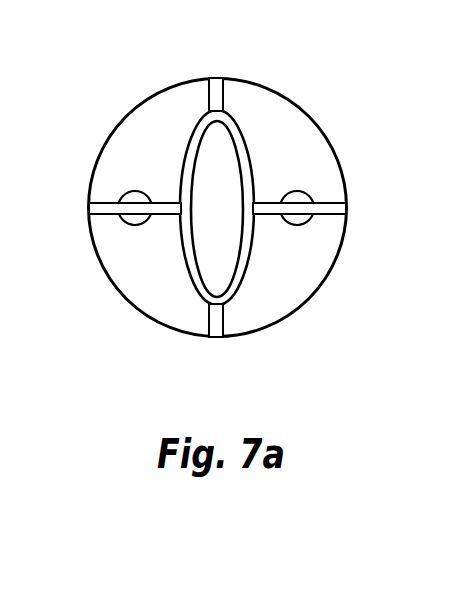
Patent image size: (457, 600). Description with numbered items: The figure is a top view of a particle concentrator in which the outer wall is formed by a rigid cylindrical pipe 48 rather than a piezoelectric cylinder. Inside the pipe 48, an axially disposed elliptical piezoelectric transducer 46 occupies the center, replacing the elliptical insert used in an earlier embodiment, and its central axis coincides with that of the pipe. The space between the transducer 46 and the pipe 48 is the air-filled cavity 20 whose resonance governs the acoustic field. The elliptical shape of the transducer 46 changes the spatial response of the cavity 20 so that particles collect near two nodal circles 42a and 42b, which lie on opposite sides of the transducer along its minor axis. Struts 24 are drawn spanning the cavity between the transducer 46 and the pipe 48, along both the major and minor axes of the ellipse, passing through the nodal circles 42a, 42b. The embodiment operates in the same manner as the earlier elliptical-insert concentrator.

The air-filled cavity 20 is at (150, 120).
The struts 24 is at (207, 96).
The nodal circle 42a is at (134, 228).
The nodal circle 42b is at (307, 189).
The elliptical piezoelectric transducer 46 is at (185, 272).
The rigid cylindrical pipe 48 is at (279, 89).